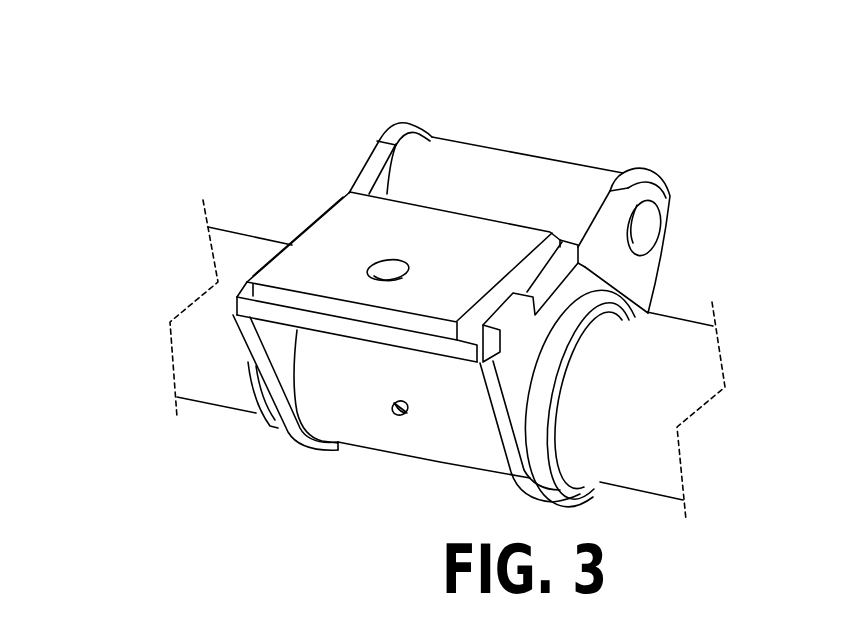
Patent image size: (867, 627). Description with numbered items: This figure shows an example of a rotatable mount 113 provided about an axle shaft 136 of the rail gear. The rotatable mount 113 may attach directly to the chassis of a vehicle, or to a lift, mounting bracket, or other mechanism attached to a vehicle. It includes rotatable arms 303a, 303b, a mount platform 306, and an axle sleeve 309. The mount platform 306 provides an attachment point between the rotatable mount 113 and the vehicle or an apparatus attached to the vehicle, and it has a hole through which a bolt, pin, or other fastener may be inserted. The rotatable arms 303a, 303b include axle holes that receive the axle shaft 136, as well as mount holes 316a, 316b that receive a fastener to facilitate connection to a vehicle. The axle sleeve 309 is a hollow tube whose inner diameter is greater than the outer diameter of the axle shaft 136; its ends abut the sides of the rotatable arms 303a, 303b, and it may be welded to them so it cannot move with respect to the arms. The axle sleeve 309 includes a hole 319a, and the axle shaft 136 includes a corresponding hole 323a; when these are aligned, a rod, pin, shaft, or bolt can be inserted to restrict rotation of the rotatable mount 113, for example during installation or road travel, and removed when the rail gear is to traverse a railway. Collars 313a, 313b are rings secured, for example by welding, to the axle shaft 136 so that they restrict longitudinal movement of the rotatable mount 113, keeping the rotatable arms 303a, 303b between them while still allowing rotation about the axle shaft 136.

The rotatable mount 113 is at (474, 305).
The axle shaft 136 is at (215, 380).
The rotatable arm 303a is at (292, 433).
The rotatable arm 303b is at (497, 425).
The mount platform 306 is at (340, 245).
The axle sleeve 309 is at (363, 398).
The collar 313a is at (256, 390).
The collar 313b is at (568, 333).
The mount hole 316a is at (371, 148).
The mount hole 316b is at (643, 229).
The hole 319a is at (396, 415).
The hole 323a is at (392, 408).